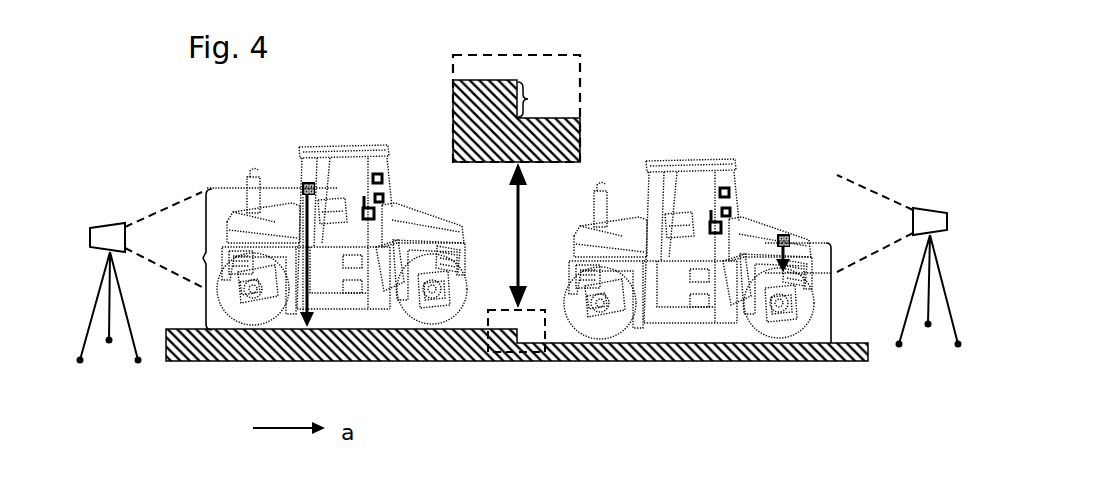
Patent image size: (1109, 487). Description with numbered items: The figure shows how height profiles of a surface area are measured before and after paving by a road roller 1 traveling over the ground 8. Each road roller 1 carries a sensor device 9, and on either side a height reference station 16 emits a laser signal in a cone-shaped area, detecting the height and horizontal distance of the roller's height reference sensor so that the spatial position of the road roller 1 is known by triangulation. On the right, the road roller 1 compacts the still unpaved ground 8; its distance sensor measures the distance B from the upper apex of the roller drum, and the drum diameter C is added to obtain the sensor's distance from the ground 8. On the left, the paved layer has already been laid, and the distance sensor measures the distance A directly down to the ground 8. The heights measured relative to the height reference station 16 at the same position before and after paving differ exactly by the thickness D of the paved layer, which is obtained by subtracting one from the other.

The road roller 1 is at (327, 146).
The ground 8 is at (457, 352).
The sensor device 9 is at (297, 177).
The height reference station 16 is at (108, 224).
The distance A is at (257, 259).
The distance B is at (833, 258).
The drum diameter C is at (833, 308).
The thickness of the paved layer D is at (516, 108).